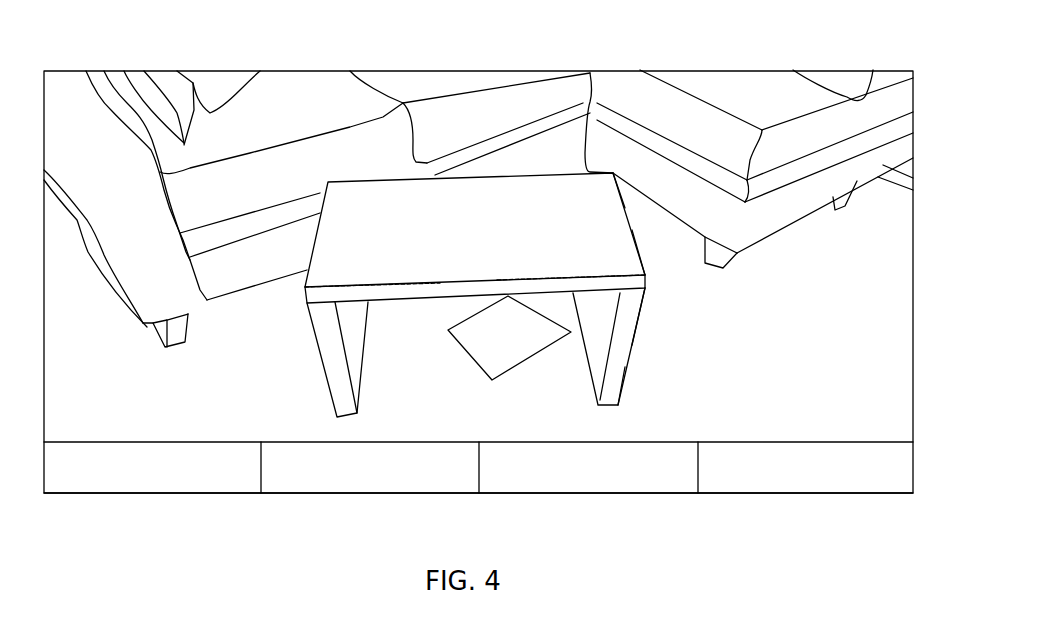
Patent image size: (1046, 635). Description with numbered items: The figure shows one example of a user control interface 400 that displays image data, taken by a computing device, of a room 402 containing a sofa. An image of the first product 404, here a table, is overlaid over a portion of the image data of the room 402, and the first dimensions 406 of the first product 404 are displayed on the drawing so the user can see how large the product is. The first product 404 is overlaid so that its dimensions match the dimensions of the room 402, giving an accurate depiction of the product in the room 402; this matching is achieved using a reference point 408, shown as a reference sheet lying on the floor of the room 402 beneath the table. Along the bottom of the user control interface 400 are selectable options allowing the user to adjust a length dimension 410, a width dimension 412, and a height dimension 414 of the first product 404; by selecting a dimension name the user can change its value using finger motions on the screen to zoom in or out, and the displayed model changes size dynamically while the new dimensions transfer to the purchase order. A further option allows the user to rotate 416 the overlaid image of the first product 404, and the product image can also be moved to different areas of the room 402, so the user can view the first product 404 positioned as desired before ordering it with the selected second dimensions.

The user control interface 400 is at (805, 53).
The room 402 is at (892, 398).
The first product 404 is at (629, 254).
The first dimensions 406 is at (641, 358).
The reference point 408 is at (510, 347).
The length dimension 410 is at (139, 485).
The width dimension 412 is at (343, 485).
The height dimension 414 is at (615, 485).
The rotate option 416 is at (818, 485).